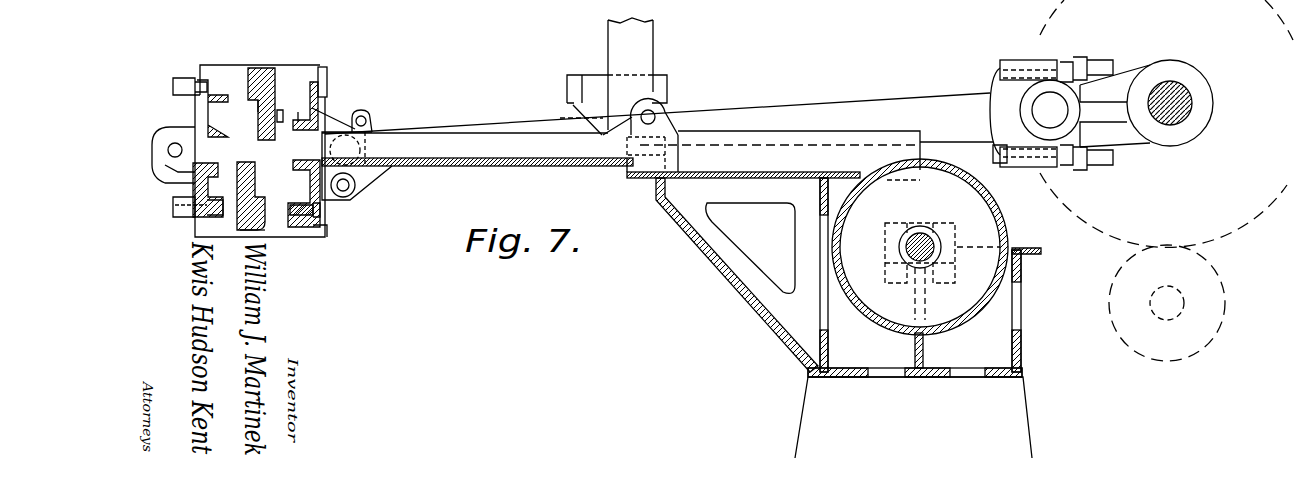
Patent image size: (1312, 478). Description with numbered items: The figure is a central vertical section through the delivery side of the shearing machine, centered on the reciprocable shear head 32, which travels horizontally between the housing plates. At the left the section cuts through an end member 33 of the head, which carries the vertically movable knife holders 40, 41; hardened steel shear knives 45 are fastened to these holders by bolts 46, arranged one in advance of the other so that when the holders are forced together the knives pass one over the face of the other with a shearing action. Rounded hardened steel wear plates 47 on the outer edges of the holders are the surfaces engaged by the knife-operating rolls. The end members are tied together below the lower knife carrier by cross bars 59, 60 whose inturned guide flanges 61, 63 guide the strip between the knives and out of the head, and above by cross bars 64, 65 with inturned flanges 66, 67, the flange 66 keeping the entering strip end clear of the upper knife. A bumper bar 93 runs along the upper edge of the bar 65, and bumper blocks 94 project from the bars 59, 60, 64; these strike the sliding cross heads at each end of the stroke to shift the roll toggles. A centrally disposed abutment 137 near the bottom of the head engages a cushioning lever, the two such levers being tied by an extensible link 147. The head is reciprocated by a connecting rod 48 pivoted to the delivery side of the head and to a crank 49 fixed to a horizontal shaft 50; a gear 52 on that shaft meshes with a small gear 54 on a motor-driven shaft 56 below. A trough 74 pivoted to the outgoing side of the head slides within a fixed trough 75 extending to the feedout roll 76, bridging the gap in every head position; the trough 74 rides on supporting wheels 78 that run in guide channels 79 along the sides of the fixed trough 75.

The shear head 32 is at (303, 222).
The end member 33 is at (312, 67).
The knife holder 40 is at (252, 104).
The knife holder 41 is at (298, 205).
The shear knife 45 is at (262, 138).
The bolt 46 is at (280, 124).
The wear plate 47 is at (252, 93).
The connecting rod 48 is at (524, 123).
The crank 49 is at (1058, 80).
The shaft 50 is at (1180, 99).
The gear 52 is at (1251, 223).
The small gear 54 is at (1225, 293).
The shaft 56 is at (1152, 318).
The cross bar 59 is at (194, 185).
The cross bar 60 is at (356, 195).
The guide flange 61 is at (218, 167).
The guide flange 63 is at (300, 177).
The cross bar 64 is at (196, 108).
The cross bar 65 is at (318, 102).
The guide flange 66 is at (258, 124).
The guide flange 67 is at (302, 118).
The trough 74 is at (450, 142).
The fixed trough 75 is at (738, 178).
The feedout roll 76 is at (991, 197).
The supporting wheel 78 is at (661, 108).
The guide channel 79 is at (755, 131).
The bumper bar 93 is at (327, 71).
The bumper block 94 is at (178, 86).
The abutment 137 is at (201, 222).
The extensible link 147 is at (252, 233).